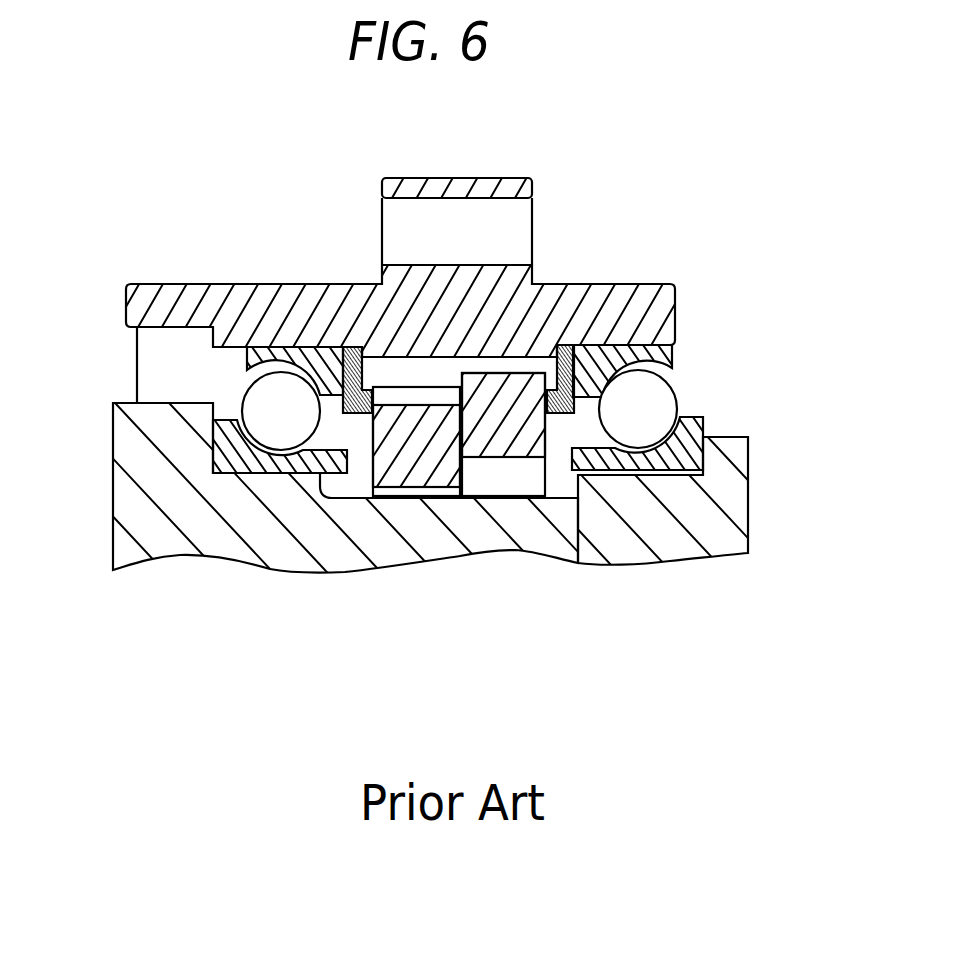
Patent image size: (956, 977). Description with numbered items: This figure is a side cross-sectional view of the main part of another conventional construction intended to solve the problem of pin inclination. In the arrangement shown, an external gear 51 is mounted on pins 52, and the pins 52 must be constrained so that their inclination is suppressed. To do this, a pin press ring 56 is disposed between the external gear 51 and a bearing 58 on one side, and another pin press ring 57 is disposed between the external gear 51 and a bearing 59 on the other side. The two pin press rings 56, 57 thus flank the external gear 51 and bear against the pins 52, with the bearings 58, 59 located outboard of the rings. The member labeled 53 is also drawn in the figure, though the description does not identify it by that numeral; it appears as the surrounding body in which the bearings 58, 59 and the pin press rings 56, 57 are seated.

The external gear 51 is at (503, 443).
The pin 52 is at (390, 367).
The rotor yoke 53 is at (610, 293).
The pin press ring 56 is at (362, 415).
The pin press ring 57 is at (557, 413).
The bearing 58 is at (224, 384).
The bearing 59 is at (695, 355).